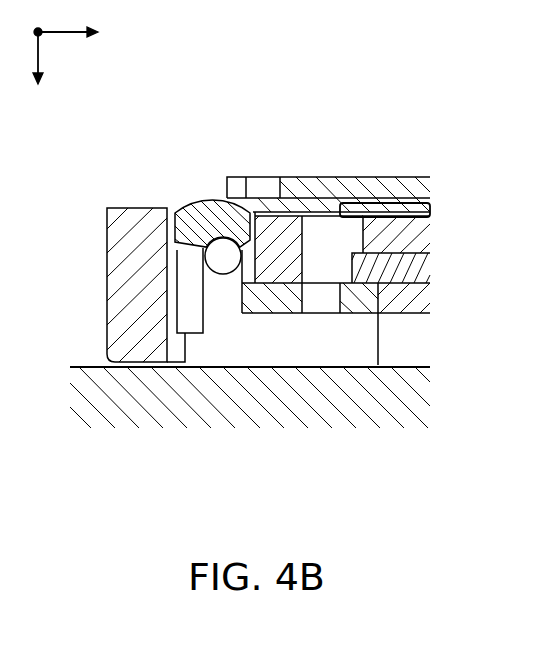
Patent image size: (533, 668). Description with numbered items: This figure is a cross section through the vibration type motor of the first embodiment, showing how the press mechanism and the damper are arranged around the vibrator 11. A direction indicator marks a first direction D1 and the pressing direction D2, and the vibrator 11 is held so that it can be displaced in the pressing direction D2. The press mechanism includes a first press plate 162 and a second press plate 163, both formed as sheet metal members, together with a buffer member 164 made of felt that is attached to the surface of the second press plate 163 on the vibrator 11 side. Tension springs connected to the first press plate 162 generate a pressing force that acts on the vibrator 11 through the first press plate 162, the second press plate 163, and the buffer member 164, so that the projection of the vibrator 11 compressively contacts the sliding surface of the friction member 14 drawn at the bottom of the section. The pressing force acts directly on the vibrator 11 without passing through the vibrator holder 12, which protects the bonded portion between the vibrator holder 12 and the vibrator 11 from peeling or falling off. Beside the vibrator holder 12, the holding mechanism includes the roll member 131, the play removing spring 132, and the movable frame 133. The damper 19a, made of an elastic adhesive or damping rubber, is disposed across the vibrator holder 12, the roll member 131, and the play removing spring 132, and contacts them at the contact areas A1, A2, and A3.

The vibrator 11 is at (397, 283).
The vibrator holder 12 is at (280, 262).
The friction member 14 is at (103, 414).
The damper 19a is at (212, 198).
The roll member 131 is at (222, 254).
The play removing spring 132 is at (165, 216).
The movable frame 133 is at (137, 345).
The first press plate 162 is at (264, 186).
The second press plate 163 is at (378, 210).
The buffer member 164 is at (412, 225).
The contact area A1 is at (253, 212).
The contact area A2 is at (218, 237).
The contact area A3 is at (175, 212).
The direction D1 is at (70, 19).
The pressing direction D2 is at (47, 81).